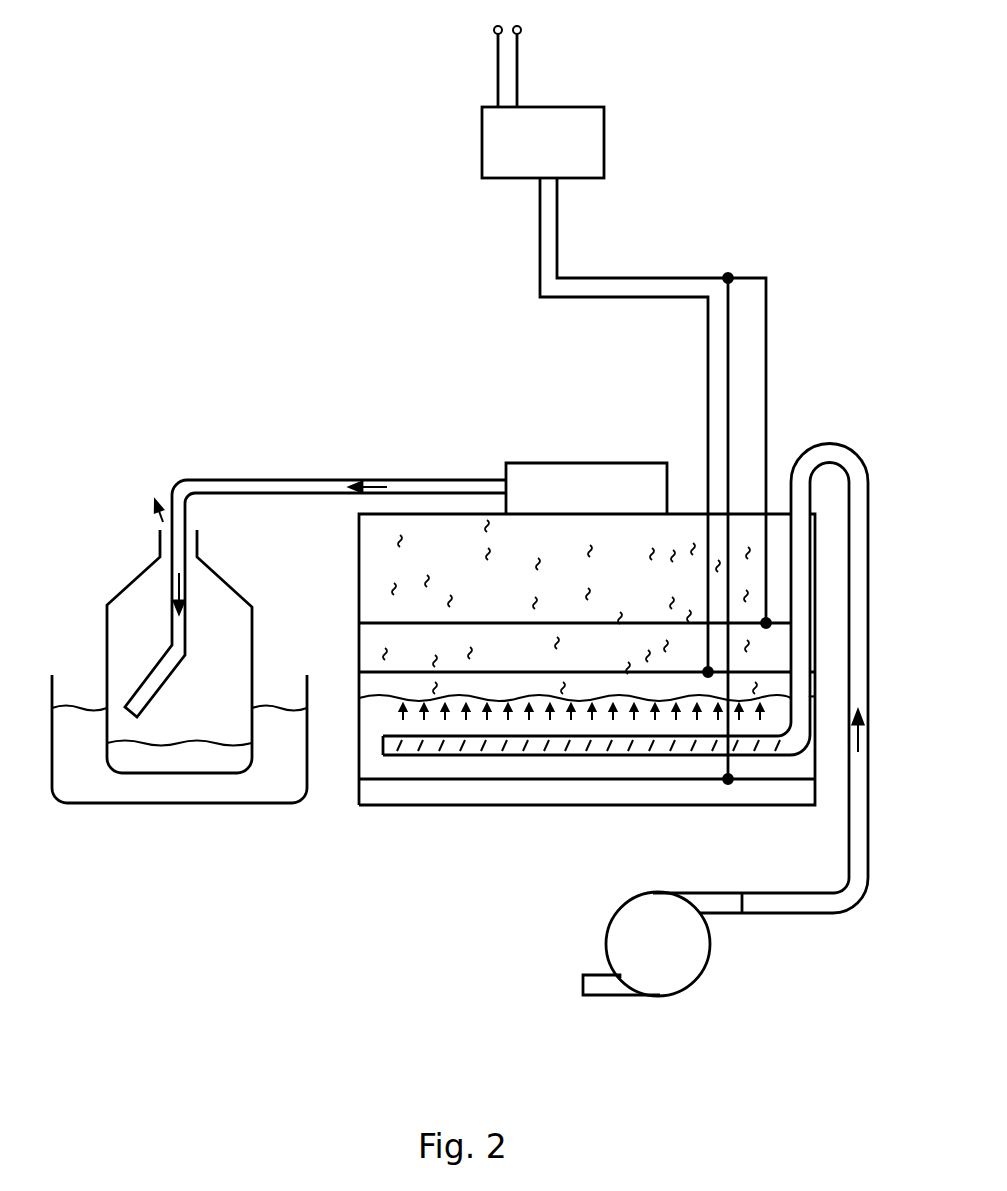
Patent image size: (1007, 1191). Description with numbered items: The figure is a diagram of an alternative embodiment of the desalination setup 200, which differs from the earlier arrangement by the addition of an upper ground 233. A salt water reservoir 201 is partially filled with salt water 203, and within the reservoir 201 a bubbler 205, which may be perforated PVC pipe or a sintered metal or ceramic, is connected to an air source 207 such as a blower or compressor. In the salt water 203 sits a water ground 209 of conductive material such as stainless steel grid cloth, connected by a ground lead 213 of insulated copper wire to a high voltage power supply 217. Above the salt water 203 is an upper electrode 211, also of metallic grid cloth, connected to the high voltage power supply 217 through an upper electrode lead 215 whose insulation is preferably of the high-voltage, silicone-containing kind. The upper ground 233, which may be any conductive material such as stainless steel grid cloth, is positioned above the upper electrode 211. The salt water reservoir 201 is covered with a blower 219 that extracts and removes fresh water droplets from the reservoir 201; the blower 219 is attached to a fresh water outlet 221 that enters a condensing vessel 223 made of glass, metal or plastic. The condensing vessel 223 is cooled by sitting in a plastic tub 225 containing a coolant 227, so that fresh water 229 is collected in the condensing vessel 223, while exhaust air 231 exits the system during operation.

The vapor generation system 200 is at (193, 102).
The salt water reservoir 201 is at (358, 552).
The salt water 203 is at (402, 768).
The bubbler 205 is at (453, 753).
The air source 207 is at (663, 963).
The water ground 209 is at (555, 780).
The upper electrode 211 is at (380, 670).
The ground lead 213 is at (560, 240).
The upper electrode lead 215 is at (538, 223).
The high voltage power supply 217 is at (588, 119).
The blower 219 is at (538, 478).
The fresh water outlet 221 is at (305, 478).
The condensing vessel 223 is at (107, 603).
The plastic tub 225 is at (263, 808).
The coolant 227 is at (75, 745).
The fresh water 229 is at (175, 760).
The exhaust air 231 is at (155, 500).
The upper ground 233 is at (393, 623).